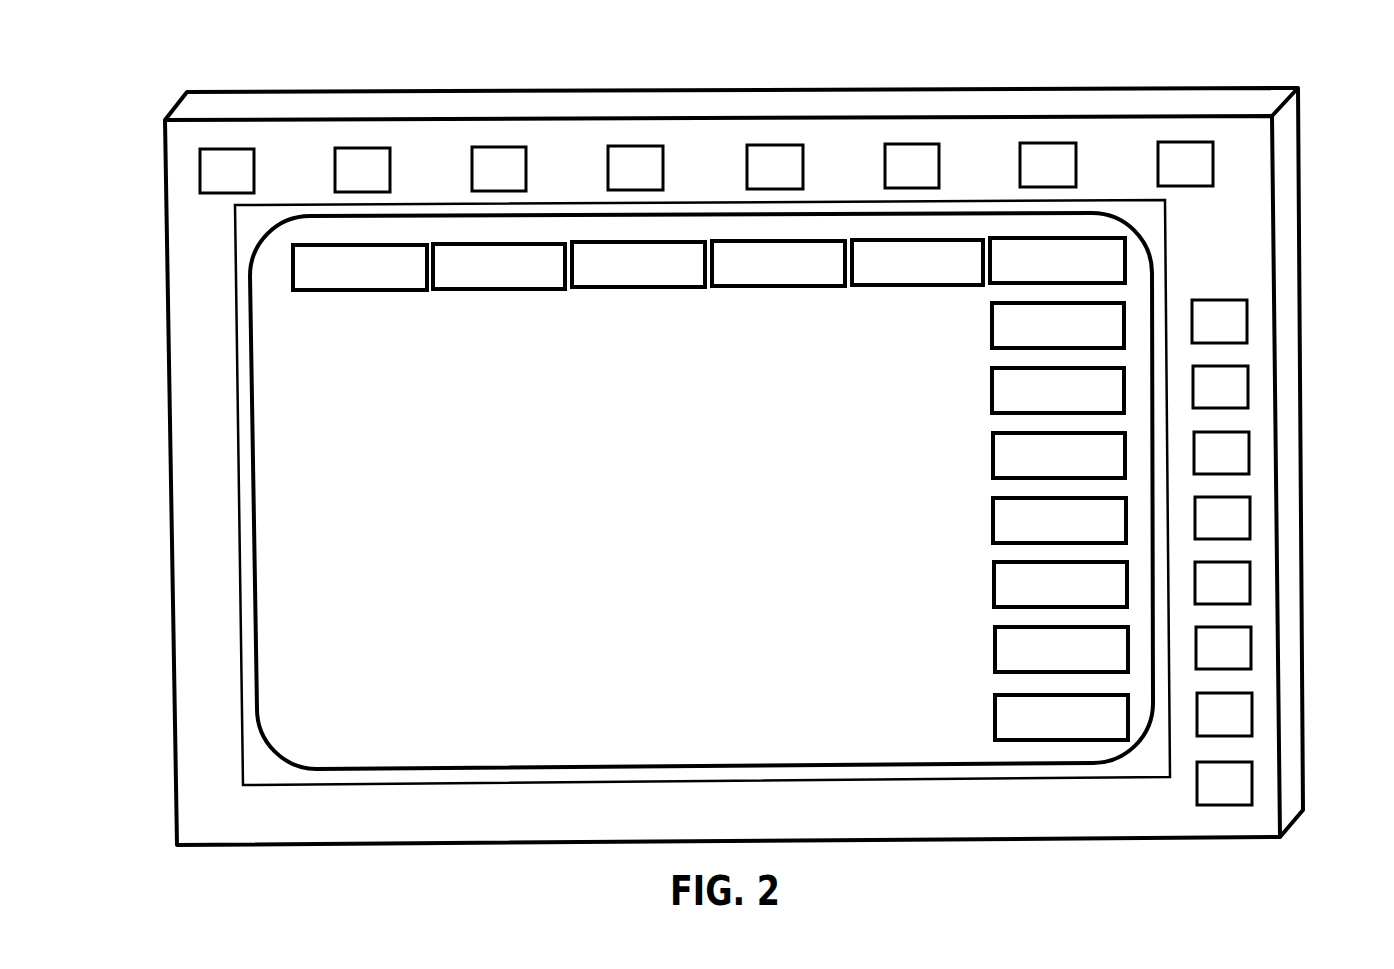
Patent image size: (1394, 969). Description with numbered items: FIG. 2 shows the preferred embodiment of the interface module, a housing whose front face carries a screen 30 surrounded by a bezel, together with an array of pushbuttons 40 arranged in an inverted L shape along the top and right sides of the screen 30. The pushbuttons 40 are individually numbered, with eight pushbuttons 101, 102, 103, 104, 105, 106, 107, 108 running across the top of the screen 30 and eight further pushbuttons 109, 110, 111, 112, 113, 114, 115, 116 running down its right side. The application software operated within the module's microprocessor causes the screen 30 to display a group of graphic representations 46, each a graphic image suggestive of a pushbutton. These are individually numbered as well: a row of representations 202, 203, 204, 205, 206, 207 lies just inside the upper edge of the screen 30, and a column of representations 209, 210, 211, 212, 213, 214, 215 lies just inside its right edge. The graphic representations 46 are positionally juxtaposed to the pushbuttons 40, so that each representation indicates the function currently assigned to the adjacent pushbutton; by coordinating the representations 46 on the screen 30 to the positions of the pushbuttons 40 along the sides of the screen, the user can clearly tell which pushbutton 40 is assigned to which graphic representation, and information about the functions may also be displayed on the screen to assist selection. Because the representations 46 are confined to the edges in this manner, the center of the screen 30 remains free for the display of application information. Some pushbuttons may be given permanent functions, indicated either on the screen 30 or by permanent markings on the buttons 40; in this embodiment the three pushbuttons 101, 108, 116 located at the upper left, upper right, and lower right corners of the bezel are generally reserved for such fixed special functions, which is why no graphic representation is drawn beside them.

The screen 30 is at (428, 757).
The pushbuttons 40 is at (1312, 120).
The graphic representations 46 is at (232, 223).
The pushbutton 101 is at (238, 150).
The pushbutton 102 is at (372, 149).
The pushbutton 103 is at (503, 147).
The pushbutton 104 is at (633, 146).
The pushbutton 105 is at (767, 145).
The pushbutton 106 is at (900, 144).
The pushbutton 107 is at (1037, 143).
The pushbutton 108 is at (1175, 142).
The pushbutton 109 is at (1247, 323).
The pushbutton 110 is at (1248, 393).
The pushbutton 111 is at (1249, 453).
The pushbutton 112 is at (1250, 515).
The pushbutton 113 is at (1250, 582).
The pushbutton 114 is at (1251, 653).
The pushbutton 115 is at (1252, 717).
The pushbutton 116 is at (1252, 785).
The graphic representation 202 is at (342, 282).
The graphic representation 203 is at (481, 281).
The graphic representation 204 is at (620, 279).
The graphic representation 205 is at (760, 278).
The graphic representation 206 is at (899, 277).
The graphic representation 207 is at (1039, 275).
The graphic representation 209 is at (1040, 340).
The graphic representation 210 is at (1040, 405).
The graphic representation 211 is at (1041, 470).
The graphic representation 212 is at (1042, 535).
The graphic representation 213 is at (1043, 599).
The graphic representation 214 is at (1044, 664).
The graphic representation 215 is at (1044, 732).